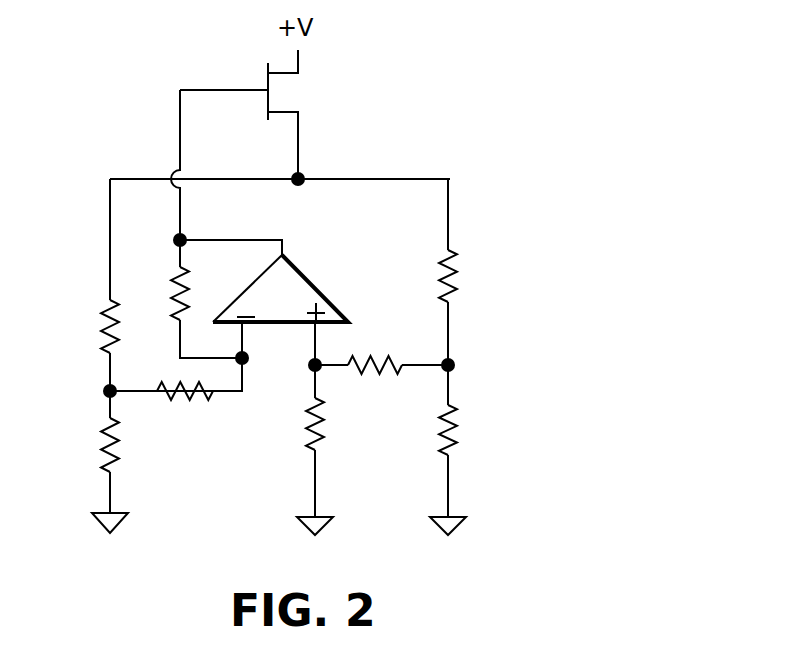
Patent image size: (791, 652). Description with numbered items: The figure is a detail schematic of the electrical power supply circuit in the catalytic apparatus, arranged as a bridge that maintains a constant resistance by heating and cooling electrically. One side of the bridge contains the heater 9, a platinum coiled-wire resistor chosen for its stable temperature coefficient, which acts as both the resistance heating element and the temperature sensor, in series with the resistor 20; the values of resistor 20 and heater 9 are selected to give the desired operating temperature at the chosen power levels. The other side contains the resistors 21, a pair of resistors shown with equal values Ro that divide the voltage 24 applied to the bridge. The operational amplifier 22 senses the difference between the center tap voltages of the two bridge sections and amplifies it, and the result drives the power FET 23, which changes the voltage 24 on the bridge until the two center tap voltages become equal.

The heater 9 is at (117, 467).
The resistor 20 is at (108, 310).
The resistors 21 is at (457, 293).
The operational amplifier 22 is at (312, 283).
The power FET 23 is at (287, 112).
The voltage 24 is at (407, 152).